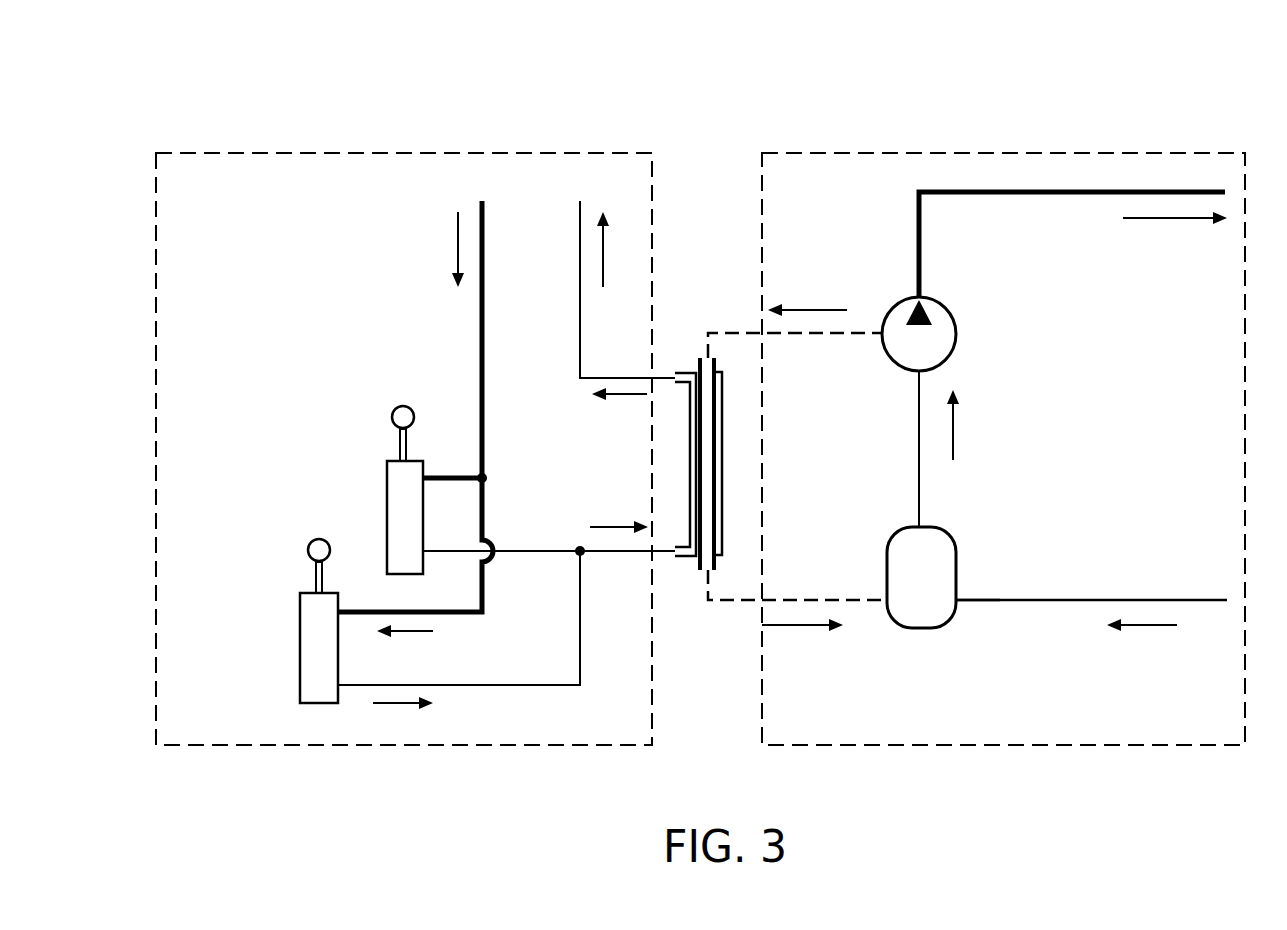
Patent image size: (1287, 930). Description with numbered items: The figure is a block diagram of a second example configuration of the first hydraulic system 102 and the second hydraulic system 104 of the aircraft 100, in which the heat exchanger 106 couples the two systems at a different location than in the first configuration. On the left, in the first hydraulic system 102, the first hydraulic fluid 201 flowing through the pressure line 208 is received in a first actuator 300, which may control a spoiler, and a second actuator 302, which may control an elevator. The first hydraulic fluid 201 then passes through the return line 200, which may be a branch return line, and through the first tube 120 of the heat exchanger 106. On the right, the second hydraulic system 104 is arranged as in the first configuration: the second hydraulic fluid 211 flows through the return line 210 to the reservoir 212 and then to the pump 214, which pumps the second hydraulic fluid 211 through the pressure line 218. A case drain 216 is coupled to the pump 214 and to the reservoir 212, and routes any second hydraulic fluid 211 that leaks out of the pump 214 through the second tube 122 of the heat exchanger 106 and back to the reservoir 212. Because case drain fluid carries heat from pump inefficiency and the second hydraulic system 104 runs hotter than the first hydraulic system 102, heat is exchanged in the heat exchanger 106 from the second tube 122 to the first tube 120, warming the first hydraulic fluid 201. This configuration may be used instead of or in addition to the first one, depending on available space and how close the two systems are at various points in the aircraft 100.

The aircraft 100 is at (237, 75).
The first hydraulic system 102 is at (470, 150).
The second hydraulic system 104 is at (907, 153).
The heat exchanger 106 is at (742, 446).
The first tube 120 is at (723, 470).
The second tube 122 is at (713, 565).
The return line 200 is at (612, 553).
The first hydraulic fluid 201 is at (452, 353).
The pressure line 208 is at (482, 308).
The return line 210 is at (1053, 600).
The second hydraulic fluid 211 is at (991, 631).
The reservoir 212 is at (945, 535).
The pump 214 is at (938, 302).
The case drain 216 is at (790, 335).
The pressure line 218 is at (1093, 192).
The first actuator 300 is at (387, 497).
The second actuator 302 is at (302, 655).